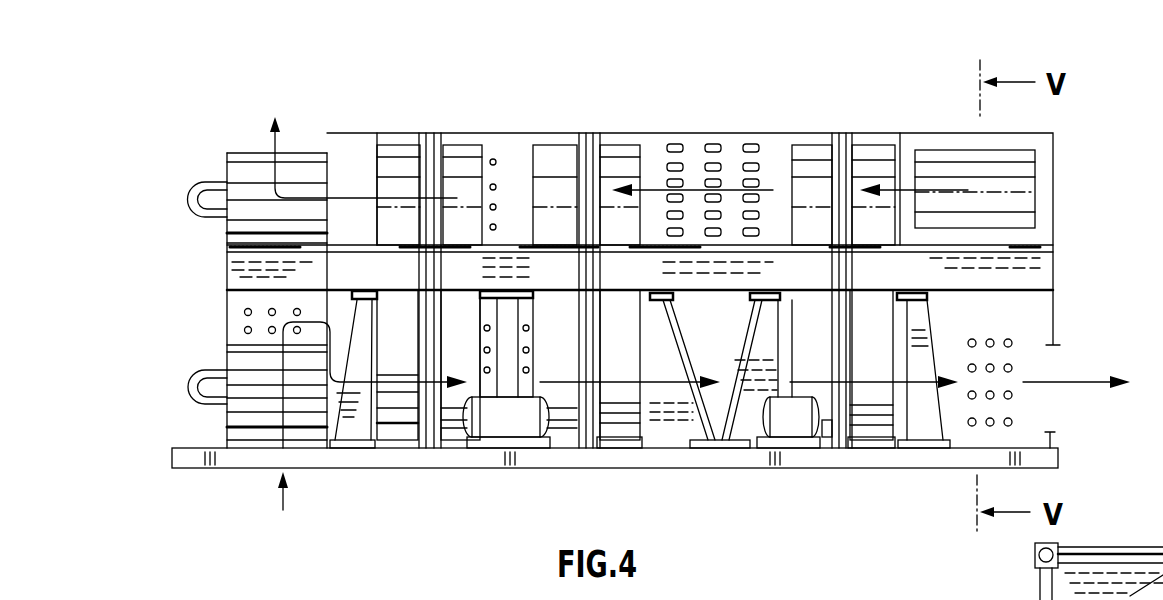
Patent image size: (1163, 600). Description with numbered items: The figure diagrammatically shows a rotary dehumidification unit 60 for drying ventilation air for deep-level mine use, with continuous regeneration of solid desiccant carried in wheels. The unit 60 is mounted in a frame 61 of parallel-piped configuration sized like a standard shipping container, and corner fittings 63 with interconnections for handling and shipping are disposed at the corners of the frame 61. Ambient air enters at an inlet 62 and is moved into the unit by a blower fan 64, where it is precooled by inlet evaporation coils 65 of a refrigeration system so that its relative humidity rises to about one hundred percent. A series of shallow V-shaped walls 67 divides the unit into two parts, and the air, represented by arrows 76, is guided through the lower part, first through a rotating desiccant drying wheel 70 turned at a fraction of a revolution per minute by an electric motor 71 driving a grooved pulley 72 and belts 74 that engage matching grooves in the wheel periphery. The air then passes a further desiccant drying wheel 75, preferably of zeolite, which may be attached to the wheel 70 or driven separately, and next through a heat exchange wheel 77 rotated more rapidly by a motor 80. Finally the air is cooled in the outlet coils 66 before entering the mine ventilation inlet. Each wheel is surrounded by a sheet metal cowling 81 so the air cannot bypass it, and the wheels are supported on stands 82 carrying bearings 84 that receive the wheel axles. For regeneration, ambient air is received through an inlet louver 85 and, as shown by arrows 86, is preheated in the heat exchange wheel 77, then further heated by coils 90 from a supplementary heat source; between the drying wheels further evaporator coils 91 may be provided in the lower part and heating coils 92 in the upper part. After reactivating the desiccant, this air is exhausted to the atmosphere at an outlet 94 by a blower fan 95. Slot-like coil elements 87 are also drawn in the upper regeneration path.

The rotary dehumidification unit 60 is at (1082, 132).
The frame 61 is at (1060, 456).
The inlet 62 is at (257, 440).
The corner fittings 63 is at (1034, 558).
The blower fan 64 is at (225, 364).
The inlet evaporation coils 65 is at (240, 315).
The outlet coils 66 is at (1012, 405).
The shallow V-shaped walls 67 is at (243, 276).
The first rotating air drying wheel 70 is at (398, 449).
The electric motor 71 is at (528, 433).
The pulley 72 is at (434, 441).
The belts 74 is at (440, 135).
The further desiccant drying wheel 75 is at (548, 182).
The arrows 76 is at (408, 380).
The heat exchange wheel 77 is at (875, 153).
The motor 80 is at (798, 433).
The cowling 81 is at (405, 140).
The stands 82 is at (352, 440).
The bearings 84 is at (360, 292).
The inlet louver 85 is at (1020, 188).
The arrows 86 is at (277, 150).
The slots 87 is at (750, 143).
The coils 90 is at (672, 143).
The further evaporator coils 91 is at (528, 344).
The heating coils 92 is at (497, 135).
The outlet 94 is at (260, 152).
The blower fan 95 is at (225, 236).